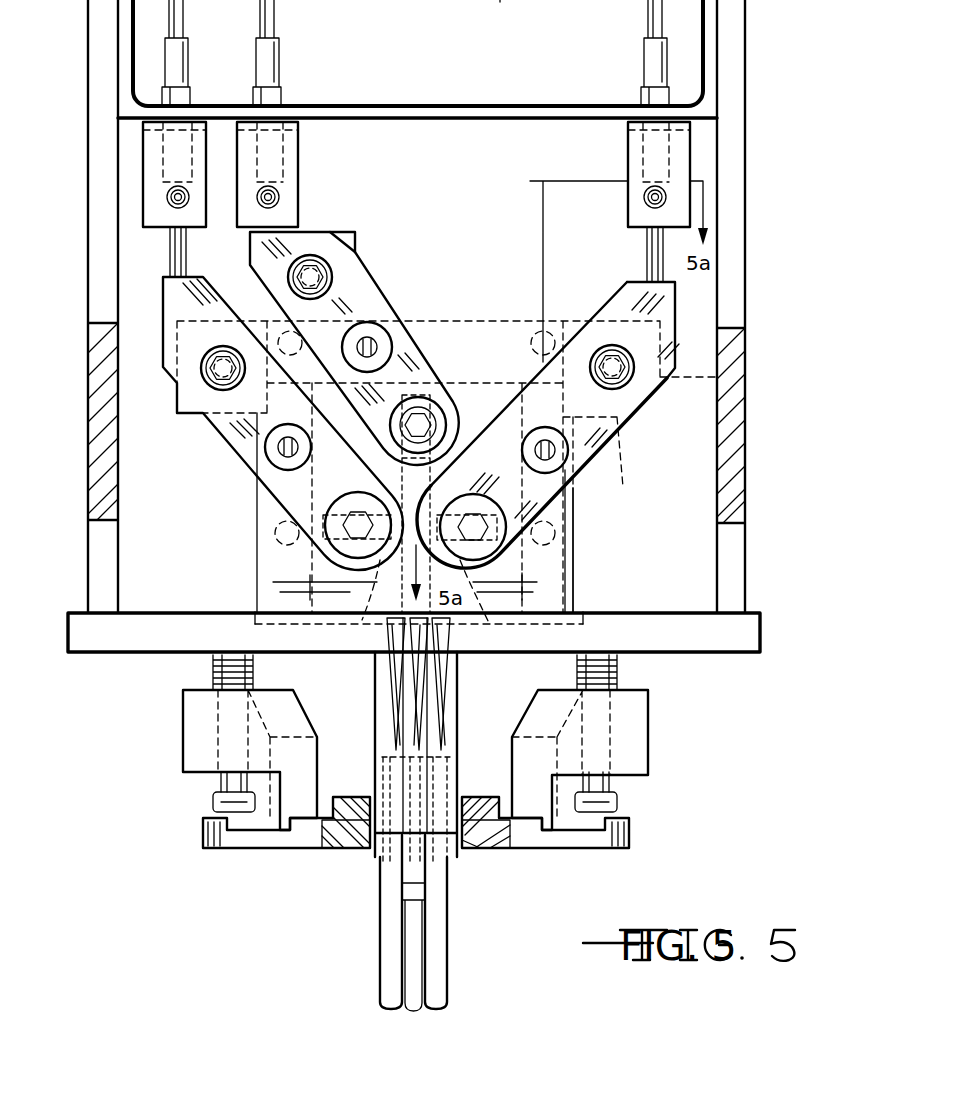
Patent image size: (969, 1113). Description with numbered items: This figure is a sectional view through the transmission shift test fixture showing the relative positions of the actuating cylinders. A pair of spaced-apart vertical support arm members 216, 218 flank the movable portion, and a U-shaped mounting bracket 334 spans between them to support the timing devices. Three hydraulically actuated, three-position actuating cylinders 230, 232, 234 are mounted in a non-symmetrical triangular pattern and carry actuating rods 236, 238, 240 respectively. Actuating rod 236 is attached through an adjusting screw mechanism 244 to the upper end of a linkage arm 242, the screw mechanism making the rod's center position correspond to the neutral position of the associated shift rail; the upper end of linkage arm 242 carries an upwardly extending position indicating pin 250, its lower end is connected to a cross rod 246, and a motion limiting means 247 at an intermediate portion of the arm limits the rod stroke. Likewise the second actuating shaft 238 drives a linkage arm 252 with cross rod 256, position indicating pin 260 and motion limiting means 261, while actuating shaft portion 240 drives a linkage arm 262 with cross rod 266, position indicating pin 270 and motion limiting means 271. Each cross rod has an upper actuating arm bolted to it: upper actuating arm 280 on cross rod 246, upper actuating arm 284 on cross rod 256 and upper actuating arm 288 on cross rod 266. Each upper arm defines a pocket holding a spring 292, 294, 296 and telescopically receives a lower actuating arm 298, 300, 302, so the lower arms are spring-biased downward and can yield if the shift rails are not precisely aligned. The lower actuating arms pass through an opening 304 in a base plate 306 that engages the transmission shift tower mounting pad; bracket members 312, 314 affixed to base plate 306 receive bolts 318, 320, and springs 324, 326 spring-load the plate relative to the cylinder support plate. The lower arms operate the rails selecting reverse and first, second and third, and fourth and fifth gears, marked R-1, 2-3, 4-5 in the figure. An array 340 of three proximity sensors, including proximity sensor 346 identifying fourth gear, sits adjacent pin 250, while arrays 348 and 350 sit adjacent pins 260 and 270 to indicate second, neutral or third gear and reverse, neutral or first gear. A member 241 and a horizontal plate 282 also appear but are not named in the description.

The vertical support arm member 216 is at (733, 247).
The vertical support arm member 218 is at (100, 226).
The actuating cylinder 230 is at (598, 468).
The actuating cylinder 232 is at (362, 230).
The actuating cylinder 234 is at (178, 398).
The actuating rod 236 is at (662, 377).
The actuating rod 238 is at (362, 242).
The actuating rod 240 is at (215, 392).
The upper component 241 is at (538, 0).
The linkage arm 242 is at (590, 490).
The adjusting screw mechanism 244 is at (624, 380).
The cross rod 246 is at (563, 482).
The motion limiting means 247 is at (578, 495).
The position indicating pin 250 is at (650, 255).
The linkage arm 252 is at (334, 270).
The cross rod 256 is at (440, 392).
The position indicating pin 260 is at (293, 213).
The motion limiting means 261 is at (402, 335).
The linkage arm 262 is at (232, 449).
The cross rod 266 is at (340, 545).
The position indicating pin 270 is at (168, 255).
The motion limiting means 271 is at (283, 478).
The upper actuating arm 280 is at (545, 688).
The cross bar 282 is at (414, 632).
The upper actuating arm 284 is at (445, 556).
The upper actuating arm 288 is at (392, 556).
The spring 292 is at (447, 718).
The spring 294 is at (382, 688).
The spring 296 is at (387, 722).
The lower actuating arm 298 is at (460, 809).
The lower actuating arm 300 is at (412, 1000).
The lower actuating arm 302 is at (390, 957).
The opening 304 is at (458, 857).
The base plate 306 is at (233, 850).
The bracket member 312 is at (200, 732).
The bracket member 314 is at (650, 747).
The bolt 318 is at (213, 800).
The bolt 320 is at (620, 806).
The spring 324 is at (213, 667).
The spring 326 is at (618, 672).
The U-shaped mounting bracket 334 is at (406, 104).
The array of proximity sensors 340 is at (697, 160).
The proximity sensor 346 is at (415, 53).
The array of proximity sensors 348 is at (306, 163).
The array of proximity sensors 350 is at (141, 168).
The wire position R-1 is at (392, 1004).
The wire position 2-3 is at (425, 1000).
The wire position 4-5 is at (449, 1003).